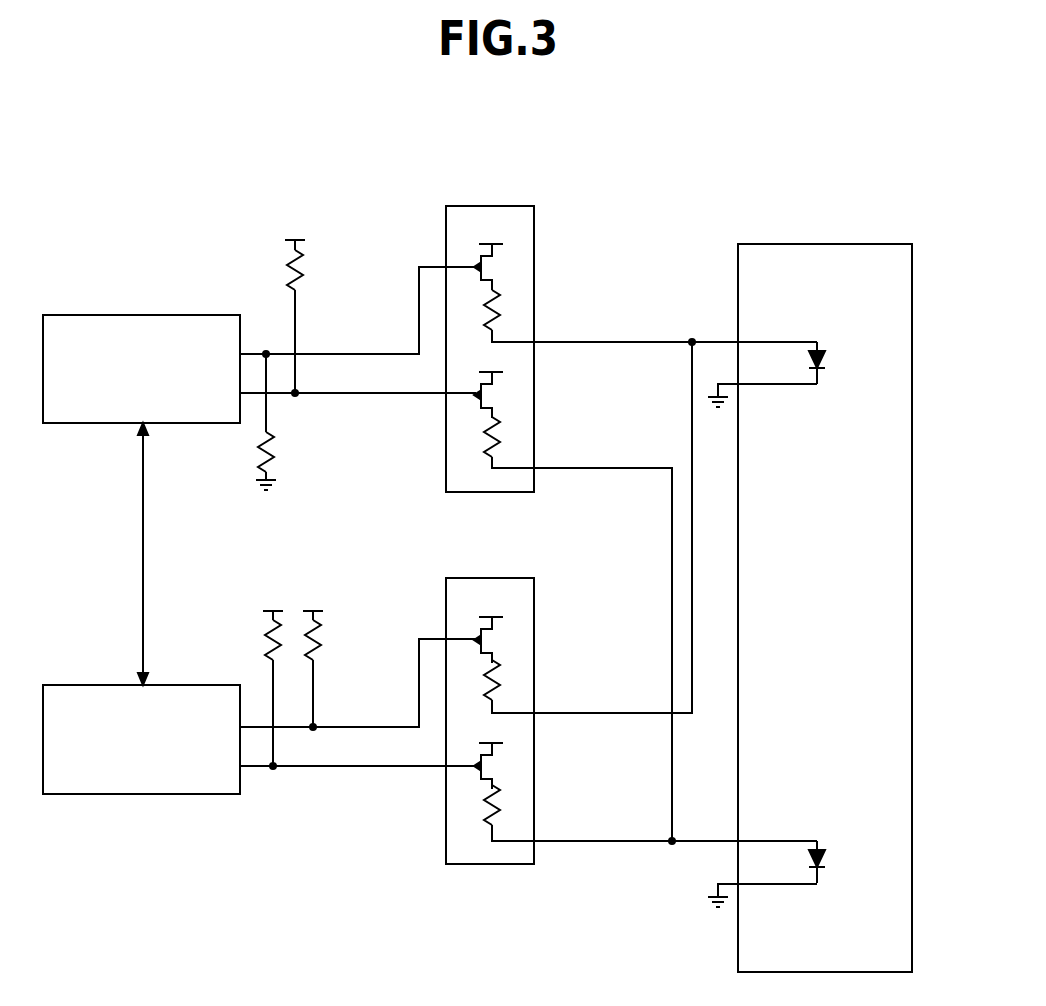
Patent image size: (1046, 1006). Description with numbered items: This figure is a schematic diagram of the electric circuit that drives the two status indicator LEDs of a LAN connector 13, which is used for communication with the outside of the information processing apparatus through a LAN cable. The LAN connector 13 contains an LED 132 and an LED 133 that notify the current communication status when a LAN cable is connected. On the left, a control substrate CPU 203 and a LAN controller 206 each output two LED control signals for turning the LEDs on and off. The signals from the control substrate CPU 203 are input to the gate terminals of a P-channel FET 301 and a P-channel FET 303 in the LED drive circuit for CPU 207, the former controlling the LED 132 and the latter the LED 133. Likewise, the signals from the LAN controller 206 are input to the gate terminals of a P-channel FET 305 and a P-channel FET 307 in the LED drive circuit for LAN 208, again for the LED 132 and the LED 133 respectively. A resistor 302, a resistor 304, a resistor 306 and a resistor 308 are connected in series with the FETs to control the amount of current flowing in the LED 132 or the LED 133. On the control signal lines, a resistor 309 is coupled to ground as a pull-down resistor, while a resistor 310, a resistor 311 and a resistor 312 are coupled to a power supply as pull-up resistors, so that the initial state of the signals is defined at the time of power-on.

The LAN connector 13 is at (783, 242).
The LED 132 is at (856, 350).
The LED 133 is at (856, 848).
The control substrate CPU 203 is at (138, 314).
The LAN controller 206 is at (86, 684).
The LED drive circuit for CPU 207 is at (488, 205).
The LED drive circuit for LAN 208 is at (488, 577).
The P-channel FET 301 is at (500, 268).
The resistor 302 is at (500, 312).
The P-channel FET 303 is at (500, 395).
The resistor 304 is at (500, 439).
The P-channel FET 305 is at (500, 640).
The resistor 306 is at (500, 684).
The P-channel FET 307 is at (500, 767).
The resistor 308 is at (500, 810).
The resistor 309 is at (280, 452).
The resistor 310 is at (310, 274).
The resistor 311 is at (260, 642).
The resistor 312 is at (326, 646).